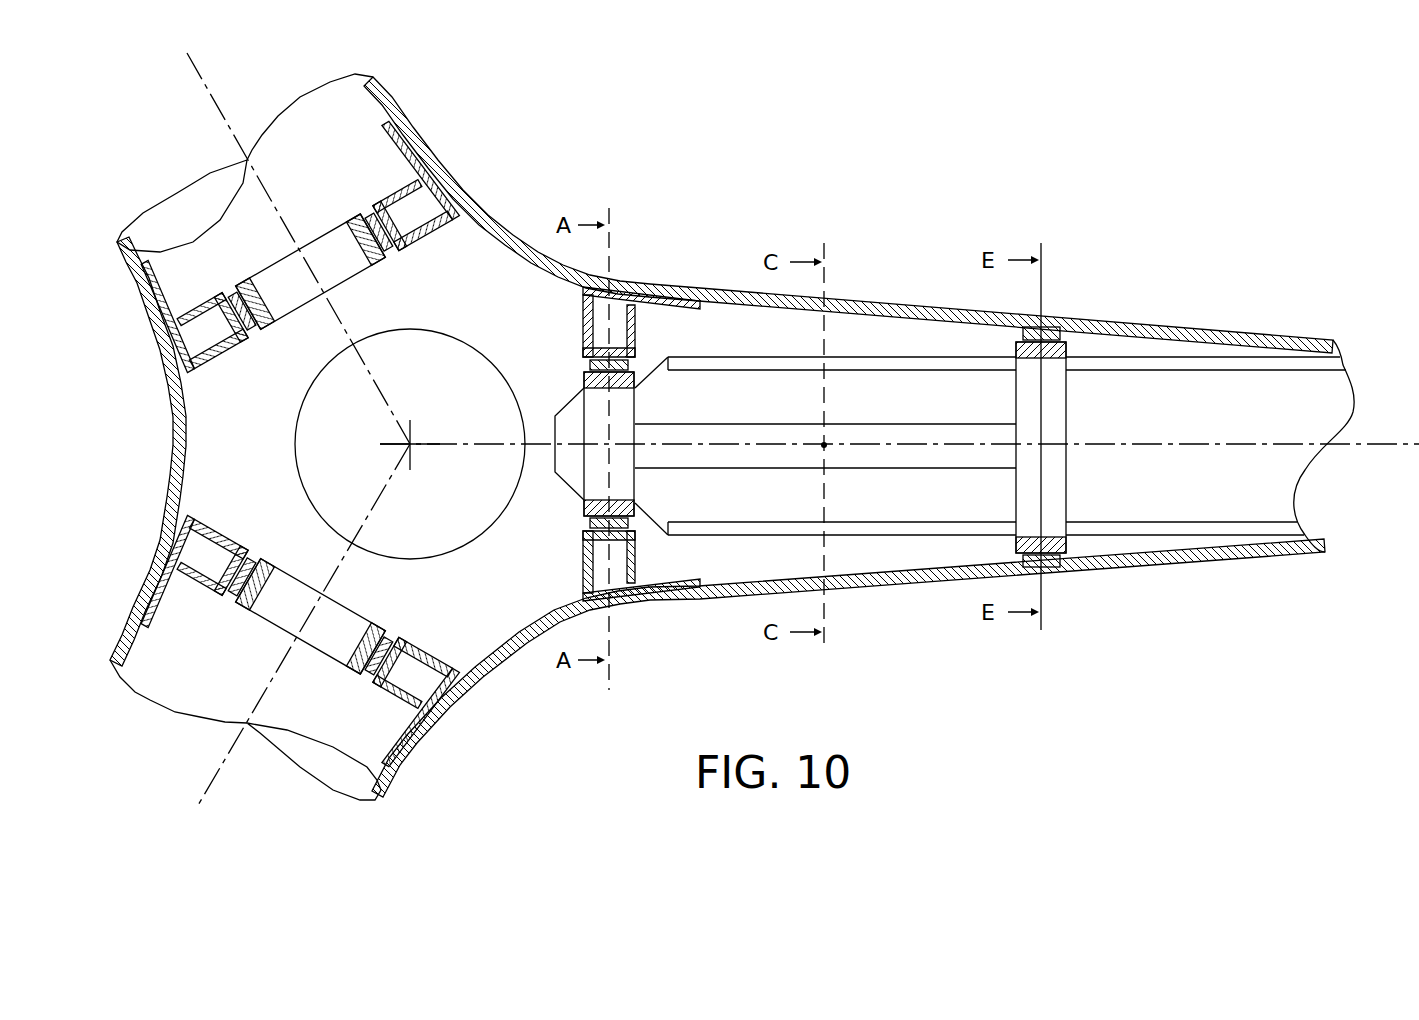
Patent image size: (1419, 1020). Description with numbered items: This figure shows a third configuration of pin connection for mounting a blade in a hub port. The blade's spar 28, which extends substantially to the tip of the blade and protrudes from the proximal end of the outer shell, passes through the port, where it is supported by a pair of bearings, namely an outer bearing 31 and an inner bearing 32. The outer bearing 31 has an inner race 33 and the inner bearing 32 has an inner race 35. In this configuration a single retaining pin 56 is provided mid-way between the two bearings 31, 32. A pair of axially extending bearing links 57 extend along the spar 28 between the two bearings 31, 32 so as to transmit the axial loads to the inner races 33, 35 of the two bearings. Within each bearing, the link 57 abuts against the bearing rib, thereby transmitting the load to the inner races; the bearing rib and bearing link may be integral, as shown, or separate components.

The spar 28 is at (707, 390).
The outer bearing 31 is at (1060, 308).
The inner bearing 32 is at (643, 272).
The inner race 33 is at (1016, 345).
The inner race 35 is at (583, 520).
The retaining pin 56 is at (826, 445).
The bearing link 57 is at (928, 435).